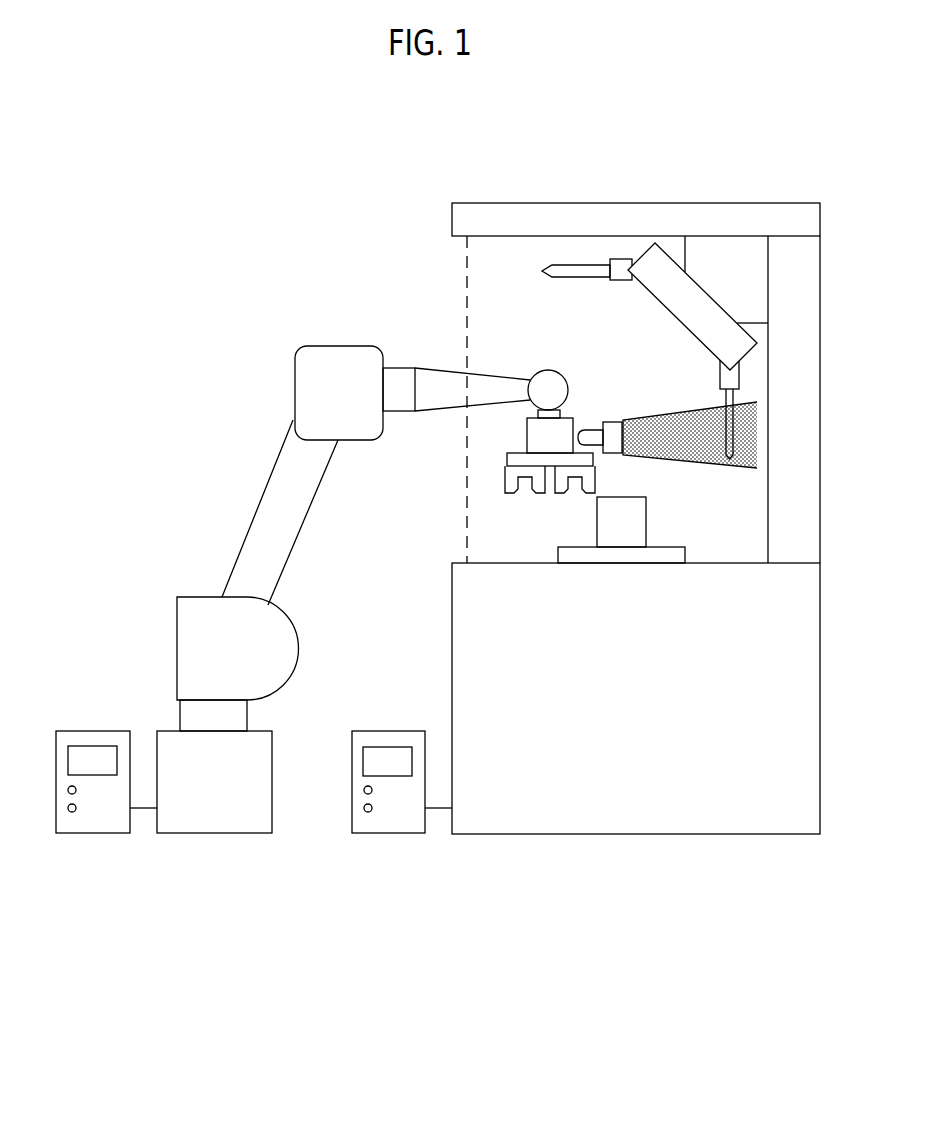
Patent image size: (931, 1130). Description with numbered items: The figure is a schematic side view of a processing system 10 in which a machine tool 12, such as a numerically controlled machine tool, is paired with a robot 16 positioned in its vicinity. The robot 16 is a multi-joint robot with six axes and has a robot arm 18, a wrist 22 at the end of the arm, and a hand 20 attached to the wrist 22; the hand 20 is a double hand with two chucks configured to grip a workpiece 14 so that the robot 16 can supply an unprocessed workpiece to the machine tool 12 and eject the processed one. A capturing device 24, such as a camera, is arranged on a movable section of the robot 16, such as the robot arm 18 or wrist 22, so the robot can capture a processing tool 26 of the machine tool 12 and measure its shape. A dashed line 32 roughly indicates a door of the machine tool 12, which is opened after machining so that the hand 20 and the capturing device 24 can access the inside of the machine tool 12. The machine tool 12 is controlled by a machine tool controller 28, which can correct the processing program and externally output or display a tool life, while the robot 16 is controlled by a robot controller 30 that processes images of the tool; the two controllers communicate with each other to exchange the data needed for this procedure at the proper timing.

The processing system 10 is at (236, 259).
The machine tool 12 is at (626, 849).
The workpiece 14 is at (646, 512).
The robot 16 is at (199, 853).
The robot arm 18 is at (433, 368).
The hand 20 is at (507, 463).
The wrist 22 is at (527, 432).
The capturing device 24 is at (601, 420).
The processing tool 26 is at (722, 402).
The machine tool controller 28 is at (392, 731).
The robot controller 30 is at (95, 731).
The dashed line 32 is at (467, 290).